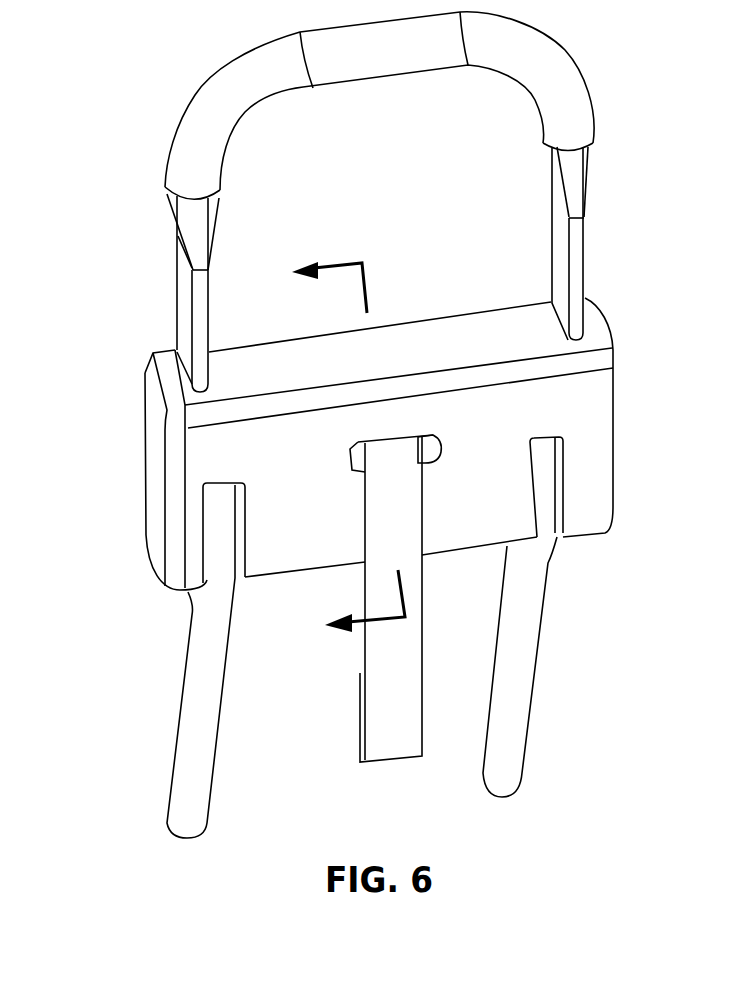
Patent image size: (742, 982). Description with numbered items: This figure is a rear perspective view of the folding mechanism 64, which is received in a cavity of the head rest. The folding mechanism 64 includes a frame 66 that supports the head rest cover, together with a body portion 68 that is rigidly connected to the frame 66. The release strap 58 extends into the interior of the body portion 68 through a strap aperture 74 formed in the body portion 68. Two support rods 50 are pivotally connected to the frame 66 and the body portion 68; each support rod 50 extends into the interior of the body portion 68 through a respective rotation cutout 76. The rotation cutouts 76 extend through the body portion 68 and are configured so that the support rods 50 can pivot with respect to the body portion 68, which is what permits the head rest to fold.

The folding mechanism 64 is at (105, 124).
The frame 66 is at (590, 86).
The body portion 68 is at (602, 415).
The strap aperture 74 is at (440, 450).
The rotation cutout 76 is at (205, 523).
The support rod 50 is at (180, 695).
The release strap 58 is at (383, 761).